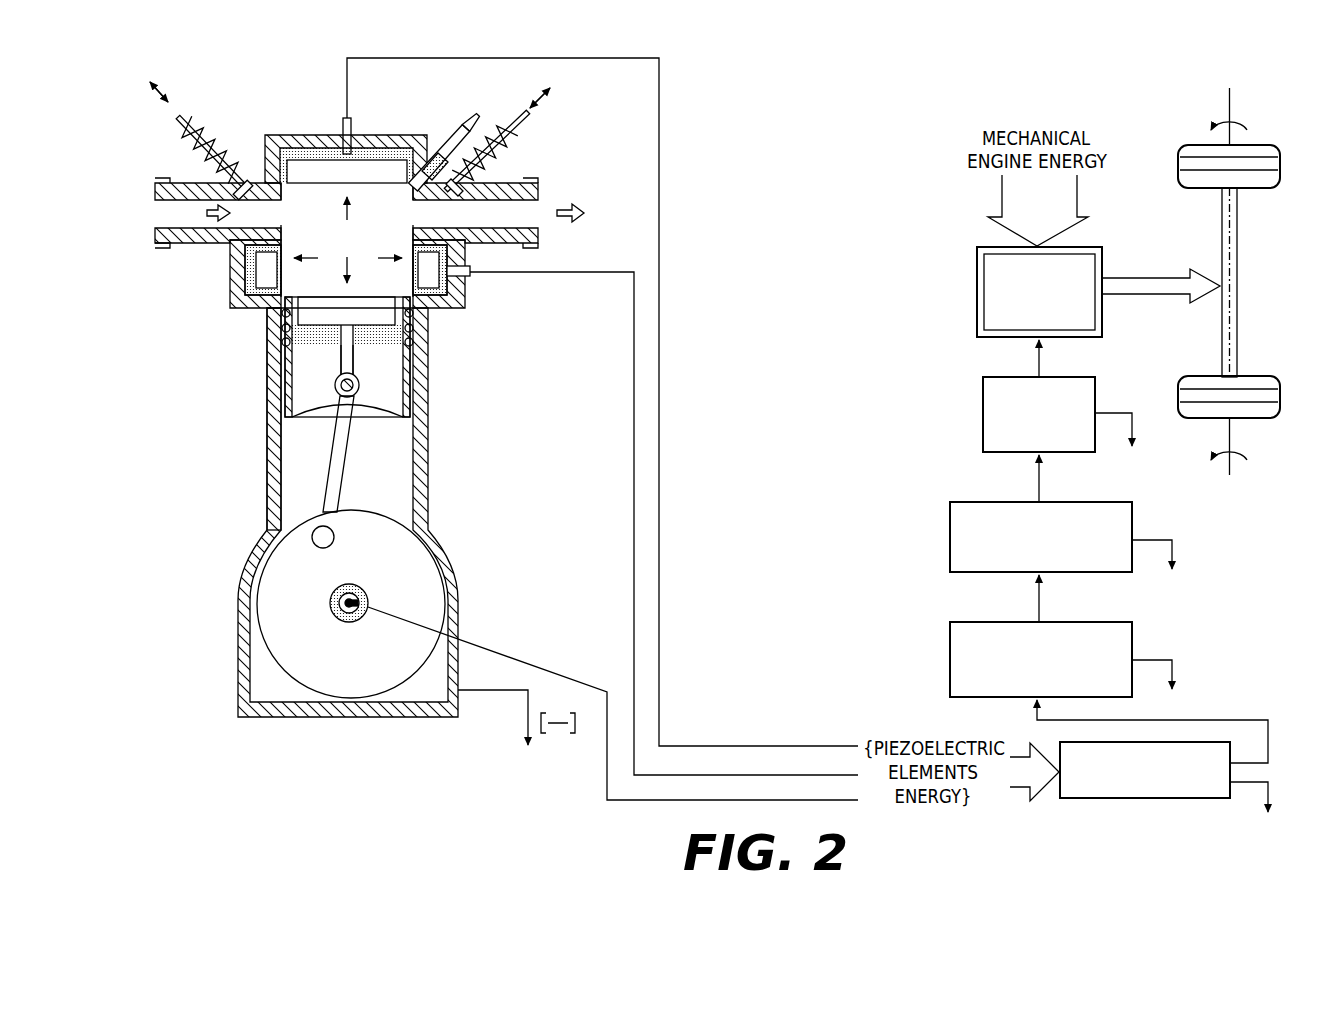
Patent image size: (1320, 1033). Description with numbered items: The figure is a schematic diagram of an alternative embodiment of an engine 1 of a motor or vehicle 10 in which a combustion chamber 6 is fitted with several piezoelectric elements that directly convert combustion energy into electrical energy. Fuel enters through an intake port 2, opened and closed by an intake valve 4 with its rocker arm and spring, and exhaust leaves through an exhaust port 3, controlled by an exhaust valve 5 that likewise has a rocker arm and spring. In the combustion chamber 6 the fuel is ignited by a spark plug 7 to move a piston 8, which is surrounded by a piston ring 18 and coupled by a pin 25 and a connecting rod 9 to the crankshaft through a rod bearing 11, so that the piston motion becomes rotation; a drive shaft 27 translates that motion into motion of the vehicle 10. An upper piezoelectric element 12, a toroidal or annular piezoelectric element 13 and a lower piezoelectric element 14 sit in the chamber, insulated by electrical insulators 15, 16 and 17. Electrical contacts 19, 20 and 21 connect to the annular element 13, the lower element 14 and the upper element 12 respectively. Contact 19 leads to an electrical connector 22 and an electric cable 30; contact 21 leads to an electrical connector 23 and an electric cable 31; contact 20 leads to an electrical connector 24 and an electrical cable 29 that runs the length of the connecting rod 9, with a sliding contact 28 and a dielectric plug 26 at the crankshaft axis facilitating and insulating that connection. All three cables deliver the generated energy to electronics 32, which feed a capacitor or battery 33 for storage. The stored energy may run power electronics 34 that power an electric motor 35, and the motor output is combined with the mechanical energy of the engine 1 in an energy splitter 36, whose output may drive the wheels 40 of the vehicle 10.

The engine 1 is at (267, 455).
The intake port 2 is at (223, 237).
The exhaust port 3 is at (538, 187).
The intake valve 4 is at (220, 142).
The exhaust valve 5 is at (518, 140).
The combustion chamber 6 is at (357, 240).
The spark plug 7 is at (432, 140).
The piston 8 is at (395, 390).
The connecting rod 9 is at (337, 473).
The motor / vehicle 10 is at (425, 545).
The rod bearing 11 is at (323, 548).
The upper piezoelectric element 12 is at (365, 137).
The toroidal or annular piezoelectric element 13 is at (267, 298).
The lower piezoelectric element 14 is at (400, 308).
The electrical insulator 15 is at (420, 155).
The electrical insulator 16 is at (222, 290).
The electrical insulator 17 is at (267, 363).
The piston ring 18 is at (413, 342).
The electrical contact 19 is at (463, 287).
The electrical contact 20 is at (343, 327).
The electrical contact 21 is at (317, 147).
The electrical connector 22 is at (472, 273).
The electrical connector 23 is at (343, 120).
The electrical connector 24 is at (352, 357).
The pin 25 is at (335, 380).
The dielectric plug 26 is at (348, 585).
The drive shaft 27 is at (352, 622).
The sliding contact 28 is at (360, 602).
The electrical cable 29 is at (497, 653).
The electric cable 30 is at (634, 440).
The electric cable 31 is at (659, 355).
The electronics 32 is at (1230, 773).
The capacitor or battery 33 is at (950, 660).
The power electronics 34 is at (950, 530).
The electric motor 35 is at (983, 413).
The energy splitter 36 is at (977, 295).
The wheels 40 is at (1240, 283).